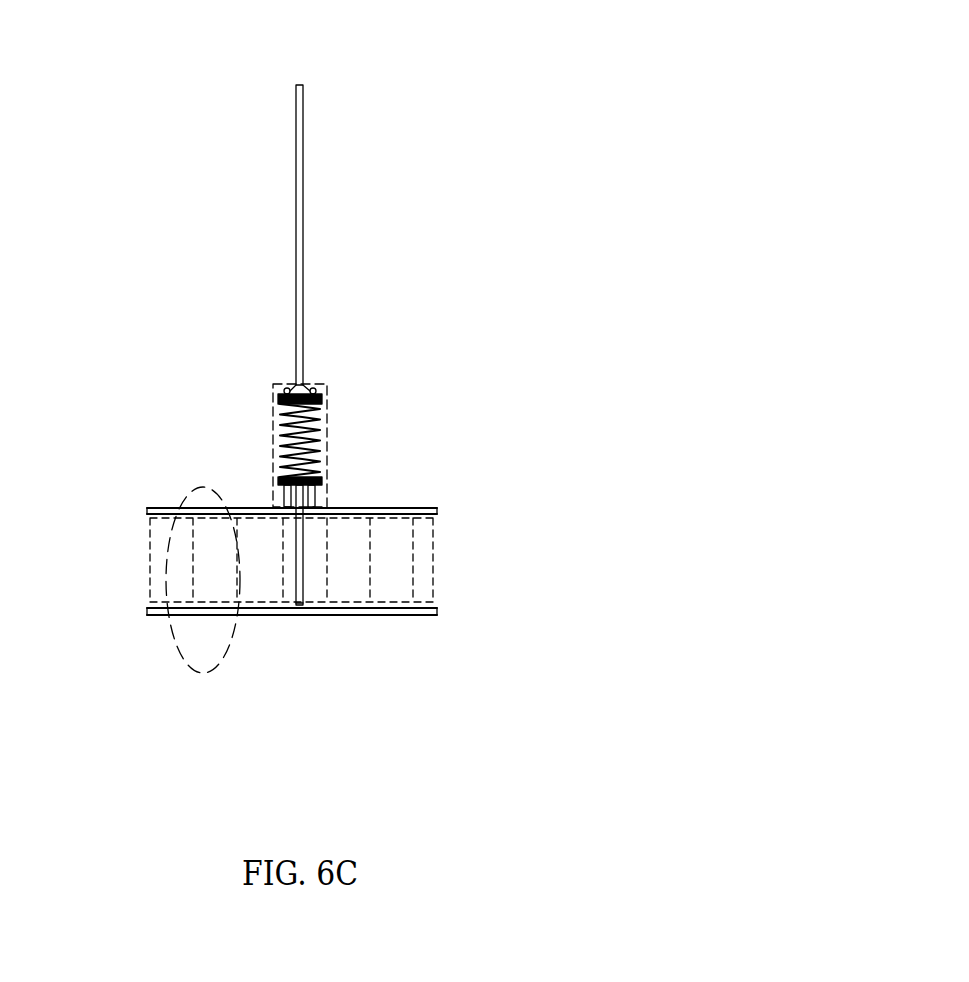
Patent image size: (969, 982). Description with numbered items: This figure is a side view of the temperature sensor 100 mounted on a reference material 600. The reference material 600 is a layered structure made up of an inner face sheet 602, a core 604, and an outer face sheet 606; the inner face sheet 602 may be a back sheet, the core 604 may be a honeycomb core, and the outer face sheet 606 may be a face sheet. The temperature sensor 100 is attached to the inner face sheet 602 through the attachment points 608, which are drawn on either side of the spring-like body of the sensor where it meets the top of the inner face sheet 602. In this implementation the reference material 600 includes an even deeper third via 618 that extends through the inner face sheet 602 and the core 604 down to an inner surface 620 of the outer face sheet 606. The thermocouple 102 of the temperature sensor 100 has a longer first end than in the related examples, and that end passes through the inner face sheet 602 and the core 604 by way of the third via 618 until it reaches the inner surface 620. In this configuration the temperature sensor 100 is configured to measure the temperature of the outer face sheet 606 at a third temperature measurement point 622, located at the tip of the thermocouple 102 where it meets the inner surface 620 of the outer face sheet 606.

The temperature sensor 100 is at (466, 130).
The thermocouple 102 is at (295, 128).
The attachment points 608 is at (328, 506).
The inner face sheet 602 is at (410, 507).
The core 604 is at (418, 535).
The inner surface 620 is at (400, 602).
The outer face sheet 606 is at (427, 617).
The reference material 600 is at (178, 652).
The third temperature measurement point 622 is at (294, 607).
The third via 618 is at (299, 612).